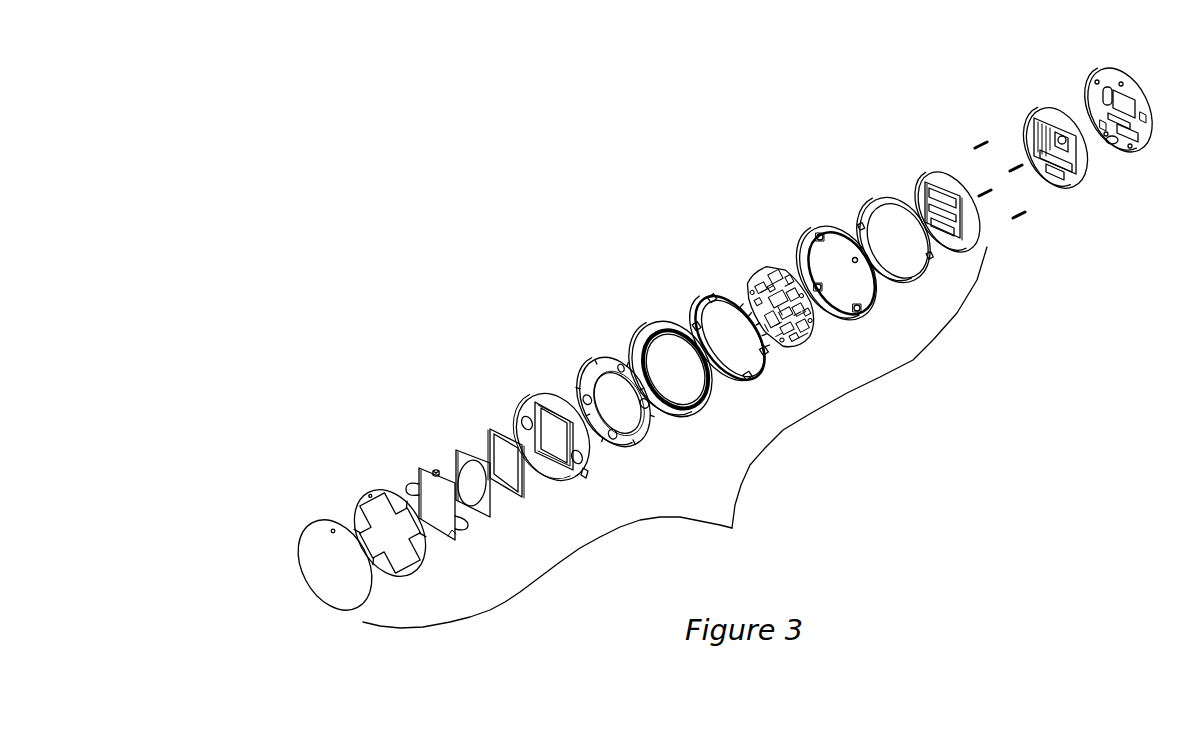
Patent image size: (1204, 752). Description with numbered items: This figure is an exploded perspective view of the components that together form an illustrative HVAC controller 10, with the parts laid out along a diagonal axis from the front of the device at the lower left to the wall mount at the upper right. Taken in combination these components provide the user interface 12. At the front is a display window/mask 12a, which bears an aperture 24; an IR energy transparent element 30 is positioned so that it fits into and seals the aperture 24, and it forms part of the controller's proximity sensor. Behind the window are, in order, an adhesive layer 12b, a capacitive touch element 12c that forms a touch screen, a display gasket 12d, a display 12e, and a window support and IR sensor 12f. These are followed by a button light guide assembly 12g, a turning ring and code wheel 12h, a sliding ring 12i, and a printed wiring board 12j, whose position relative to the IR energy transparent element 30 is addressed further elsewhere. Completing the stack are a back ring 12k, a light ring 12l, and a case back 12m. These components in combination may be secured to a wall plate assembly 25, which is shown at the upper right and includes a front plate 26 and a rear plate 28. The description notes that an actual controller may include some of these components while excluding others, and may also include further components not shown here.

The HVAC controller 10 is at (556, 181).
The user interface 12 is at (675, 437).
The display window/mask 12a is at (318, 527).
The adhesive layer 12b is at (370, 497).
The capacitive touch element 12c is at (419, 467).
The display gasket 12d is at (457, 453).
The display 12e is at (490, 430).
The window support and IR sensor 12f is at (530, 395).
The button light guide assembly 12g is at (593, 363).
The turning ring and code wheel 12h is at (650, 324).
The sliding ring 12i is at (707, 298).
The printed wiring board 12j is at (765, 268).
The back ring 12k is at (815, 233).
The light ring 12l is at (878, 205).
The case back 12m is at (930, 178).
The aperture 24 is at (333, 535).
The wall plate assembly 25 is at (1173, 140).
The front plate 26 is at (1036, 113).
The rear plate 28 is at (1095, 73).
The IR energy transparent element 30 is at (441, 470).